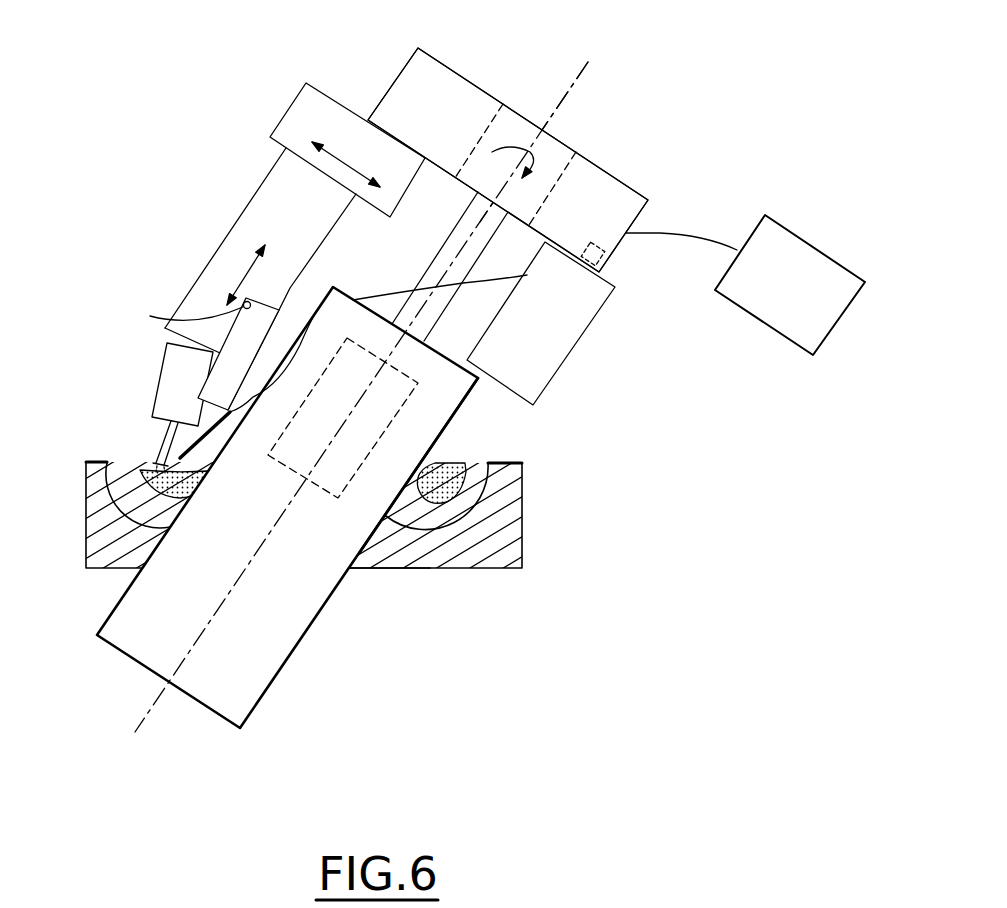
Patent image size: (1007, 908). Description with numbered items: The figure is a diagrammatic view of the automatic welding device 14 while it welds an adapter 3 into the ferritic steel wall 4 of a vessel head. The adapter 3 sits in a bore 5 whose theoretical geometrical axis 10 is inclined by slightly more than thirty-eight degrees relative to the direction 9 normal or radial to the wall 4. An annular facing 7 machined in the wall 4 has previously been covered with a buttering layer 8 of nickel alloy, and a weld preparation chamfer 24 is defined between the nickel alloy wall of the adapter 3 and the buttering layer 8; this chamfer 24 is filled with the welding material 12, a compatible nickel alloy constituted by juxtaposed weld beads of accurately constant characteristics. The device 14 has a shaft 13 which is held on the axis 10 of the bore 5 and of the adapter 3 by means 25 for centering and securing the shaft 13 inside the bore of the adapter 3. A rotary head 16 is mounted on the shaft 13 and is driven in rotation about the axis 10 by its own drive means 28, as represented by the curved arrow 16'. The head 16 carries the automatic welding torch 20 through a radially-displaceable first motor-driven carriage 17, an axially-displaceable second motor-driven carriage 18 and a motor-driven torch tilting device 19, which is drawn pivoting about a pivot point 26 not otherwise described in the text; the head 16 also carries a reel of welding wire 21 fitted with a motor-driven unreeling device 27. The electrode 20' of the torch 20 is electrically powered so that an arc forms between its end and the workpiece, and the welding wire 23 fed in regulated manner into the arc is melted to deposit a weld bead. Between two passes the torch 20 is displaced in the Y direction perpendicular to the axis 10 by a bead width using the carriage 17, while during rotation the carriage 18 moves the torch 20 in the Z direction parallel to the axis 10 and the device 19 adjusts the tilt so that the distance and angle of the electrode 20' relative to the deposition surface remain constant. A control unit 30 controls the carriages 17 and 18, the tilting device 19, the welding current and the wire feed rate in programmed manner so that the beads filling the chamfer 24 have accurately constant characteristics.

The adapter 3 is at (250, 677).
The wall 4 is at (503, 526).
The bore 5 is at (368, 548).
The annular facing 7 is at (462, 525).
The buttering layer 8 is at (110, 521).
The direction 9 is at (322, 598).
The axis 10 is at (148, 705).
The welding material 12 is at (450, 465).
The shaft 13 is at (448, 267).
The automatic welding device 14 is at (637, 118).
The rotary head 16 is at (531, 160).
The curved arrow 16' is at (517, 107).
The first motor-driven carriage 17 is at (330, 98).
The second motor-driven carriage 18 is at (275, 185).
The torch tilting device 19 is at (243, 337).
The welding torch 20 is at (160, 383).
The electrode 20' is at (133, 441).
The reel of welding wire 21 is at (560, 337).
The welding wire 23 is at (372, 297).
The weld preparation chamfer 24 is at (137, 470).
The centering and securing means 25 is at (275, 460).
The pivot 26 is at (200, 320).
The motor-driven unreeling device 27 is at (600, 268).
The drive means 28 is at (556, 158).
The control unit 30 is at (745, 285).